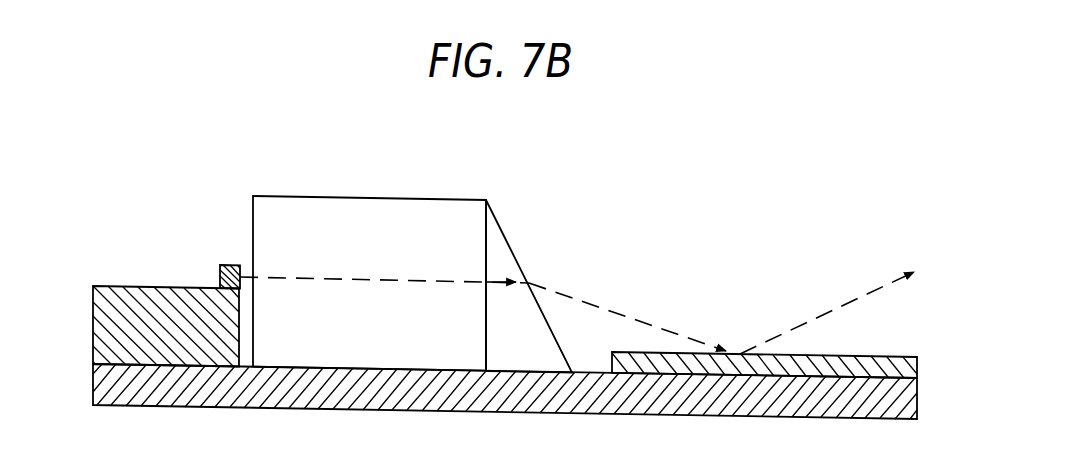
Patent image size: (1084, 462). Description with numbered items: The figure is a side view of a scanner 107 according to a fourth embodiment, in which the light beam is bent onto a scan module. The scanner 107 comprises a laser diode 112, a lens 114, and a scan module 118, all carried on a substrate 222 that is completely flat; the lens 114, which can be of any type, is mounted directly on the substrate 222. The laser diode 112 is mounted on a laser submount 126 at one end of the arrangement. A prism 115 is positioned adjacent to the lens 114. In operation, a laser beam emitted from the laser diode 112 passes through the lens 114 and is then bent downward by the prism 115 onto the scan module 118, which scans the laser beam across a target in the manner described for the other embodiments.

The scanner 107 is at (613, 217).
The laser diode 112 is at (225, 264).
The lens 114 is at (397, 197).
The prism 115 is at (513, 242).
The scan module 118 is at (817, 356).
The laser submount 126 is at (143, 284).
The substrate 222 is at (593, 371).